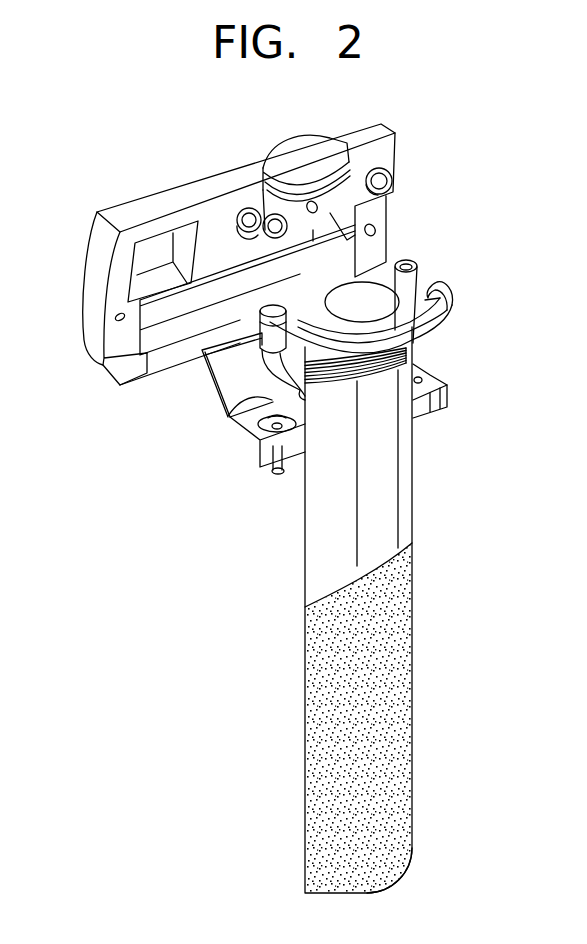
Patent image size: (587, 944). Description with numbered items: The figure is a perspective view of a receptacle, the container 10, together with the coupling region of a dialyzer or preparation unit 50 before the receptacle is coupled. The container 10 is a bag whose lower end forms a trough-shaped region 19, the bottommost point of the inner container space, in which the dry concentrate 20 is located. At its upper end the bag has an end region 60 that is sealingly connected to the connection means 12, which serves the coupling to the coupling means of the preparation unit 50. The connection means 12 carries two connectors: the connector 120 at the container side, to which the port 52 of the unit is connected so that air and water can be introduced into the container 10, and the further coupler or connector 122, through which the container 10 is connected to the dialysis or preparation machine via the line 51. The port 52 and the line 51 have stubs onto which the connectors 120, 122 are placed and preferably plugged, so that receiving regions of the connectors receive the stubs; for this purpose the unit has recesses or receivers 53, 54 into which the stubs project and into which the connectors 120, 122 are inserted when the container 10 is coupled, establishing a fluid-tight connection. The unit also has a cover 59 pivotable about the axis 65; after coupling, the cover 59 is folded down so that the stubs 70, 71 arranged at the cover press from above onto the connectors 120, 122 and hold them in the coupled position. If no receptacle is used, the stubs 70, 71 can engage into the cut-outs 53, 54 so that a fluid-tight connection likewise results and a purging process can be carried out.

The container 10 is at (458, 494).
The connection means 12 is at (428, 292).
The trough-shaped region 19 is at (388, 885).
The dry concentrate 20 is at (385, 637).
The preparation unit 50 is at (165, 432).
The line 51 is at (446, 407).
The port 52 is at (283, 476).
The receiver 53 is at (255, 430).
The receiver 54 is at (427, 373).
The cover 59 is at (122, 212).
The end region of the bag 60 is at (342, 373).
The axis 65 is at (140, 333).
The stub 70 is at (245, 208).
The stub 71 is at (396, 184).
The connector 120 is at (262, 348).
The connector 122 is at (405, 261).